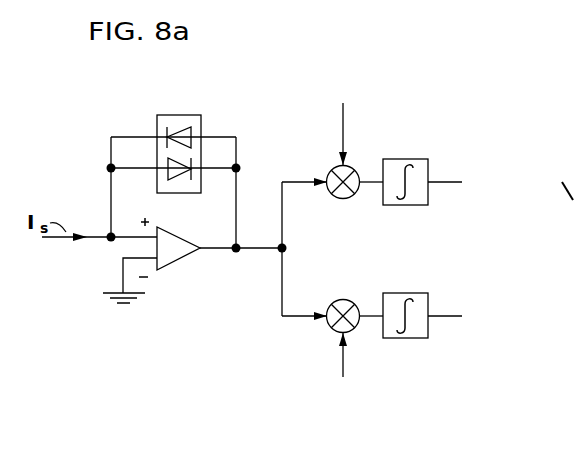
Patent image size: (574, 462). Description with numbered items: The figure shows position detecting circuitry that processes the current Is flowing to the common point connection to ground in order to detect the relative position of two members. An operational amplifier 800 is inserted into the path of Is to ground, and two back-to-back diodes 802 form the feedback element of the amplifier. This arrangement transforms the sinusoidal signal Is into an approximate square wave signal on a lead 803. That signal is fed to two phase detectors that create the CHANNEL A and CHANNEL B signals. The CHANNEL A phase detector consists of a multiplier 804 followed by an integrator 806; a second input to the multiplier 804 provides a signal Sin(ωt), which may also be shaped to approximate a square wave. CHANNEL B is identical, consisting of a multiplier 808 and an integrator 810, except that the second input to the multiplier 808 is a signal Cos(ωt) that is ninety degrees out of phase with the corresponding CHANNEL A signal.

The operational amplifier 800 is at (168, 237).
The back-to-back diodes 802 is at (182, 114).
The lead 803 is at (258, 256).
The multiplier 804 is at (332, 170).
The integrator 806 is at (412, 159).
The multiplier 808 is at (338, 301).
The integrator 810 is at (412, 293).